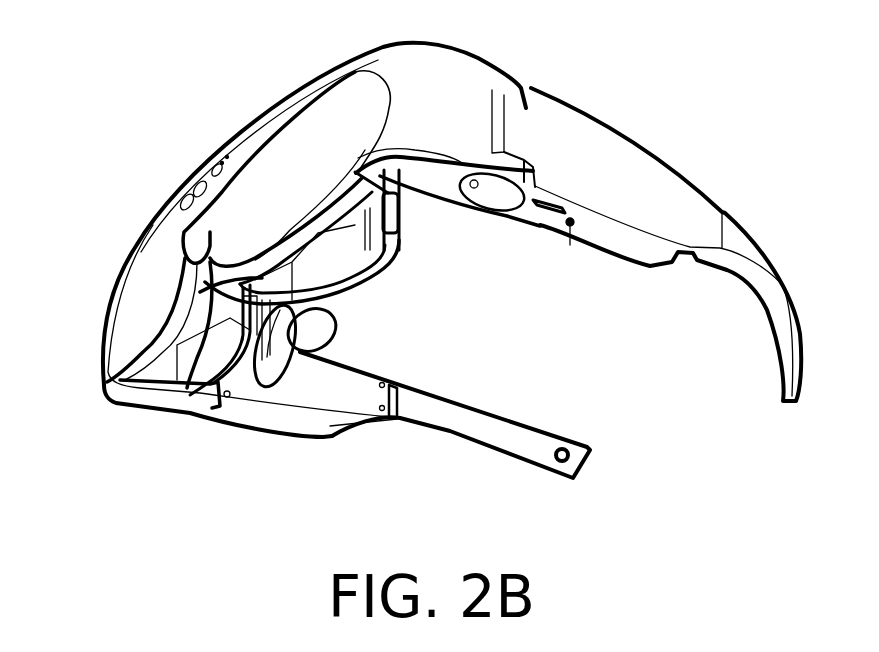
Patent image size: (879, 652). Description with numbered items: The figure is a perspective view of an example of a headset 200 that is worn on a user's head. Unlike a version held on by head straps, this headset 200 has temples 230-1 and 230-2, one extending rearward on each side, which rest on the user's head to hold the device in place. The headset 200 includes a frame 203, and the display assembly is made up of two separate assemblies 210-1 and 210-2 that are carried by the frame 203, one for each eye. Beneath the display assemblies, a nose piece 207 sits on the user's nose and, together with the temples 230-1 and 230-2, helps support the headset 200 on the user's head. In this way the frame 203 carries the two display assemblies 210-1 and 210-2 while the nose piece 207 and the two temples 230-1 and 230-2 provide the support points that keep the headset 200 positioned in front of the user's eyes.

The headset 200 is at (706, 41).
The frame 203 is at (237, 138).
The nose piece 207 is at (327, 337).
The display assembly 210-1 is at (135, 443).
The display assembly 210-2 is at (390, 288).
The temple 230-1 is at (460, 416).
The temple 230-2 is at (643, 173).